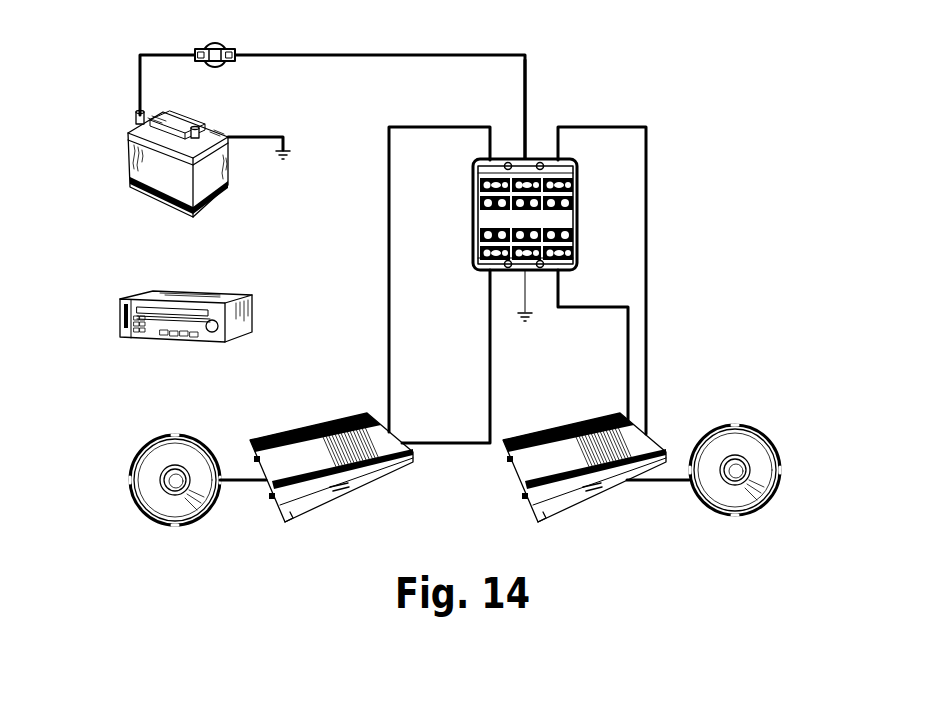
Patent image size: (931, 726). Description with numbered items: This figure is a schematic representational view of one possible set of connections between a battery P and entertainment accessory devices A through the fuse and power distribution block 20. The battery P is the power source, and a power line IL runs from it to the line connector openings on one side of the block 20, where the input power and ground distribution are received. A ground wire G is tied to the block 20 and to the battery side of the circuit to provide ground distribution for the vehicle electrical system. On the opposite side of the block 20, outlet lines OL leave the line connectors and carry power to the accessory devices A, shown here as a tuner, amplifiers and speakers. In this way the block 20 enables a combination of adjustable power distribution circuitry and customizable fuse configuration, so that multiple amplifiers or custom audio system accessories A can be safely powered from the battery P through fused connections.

The battery P is at (178, 176).
The ground wire G is at (286, 150).
The power line IL is at (525, 98).
The distribution block 20 is at (591, 211).
The outlet line OL is at (647, 181).
The accessory device A is at (126, 314).